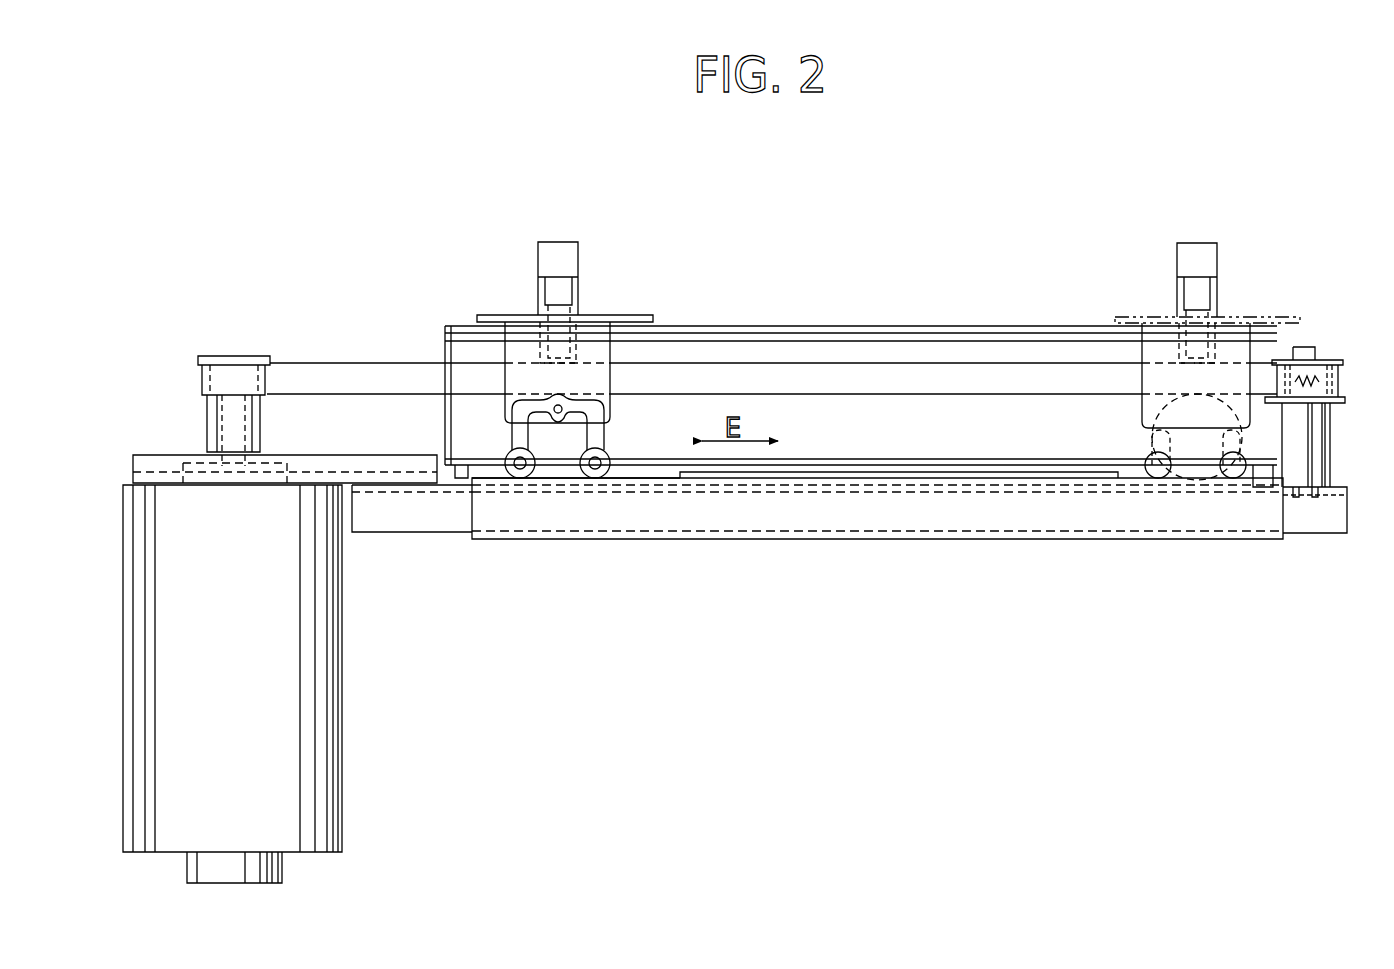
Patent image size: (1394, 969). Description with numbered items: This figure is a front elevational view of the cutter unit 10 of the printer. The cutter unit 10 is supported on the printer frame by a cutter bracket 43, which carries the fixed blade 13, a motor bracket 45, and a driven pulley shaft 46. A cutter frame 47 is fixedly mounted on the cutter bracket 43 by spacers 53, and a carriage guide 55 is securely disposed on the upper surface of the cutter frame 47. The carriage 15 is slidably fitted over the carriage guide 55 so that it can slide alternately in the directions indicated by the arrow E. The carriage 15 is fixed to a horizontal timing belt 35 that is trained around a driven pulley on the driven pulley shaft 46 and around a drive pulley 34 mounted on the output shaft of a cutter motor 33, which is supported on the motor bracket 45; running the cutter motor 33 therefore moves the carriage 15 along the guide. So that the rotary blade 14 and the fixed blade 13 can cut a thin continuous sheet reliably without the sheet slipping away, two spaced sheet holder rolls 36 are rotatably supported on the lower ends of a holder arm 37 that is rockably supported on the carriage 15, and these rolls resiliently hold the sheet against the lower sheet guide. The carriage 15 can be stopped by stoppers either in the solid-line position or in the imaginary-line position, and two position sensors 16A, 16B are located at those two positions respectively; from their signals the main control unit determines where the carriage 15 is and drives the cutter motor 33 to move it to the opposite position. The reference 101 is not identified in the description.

The cutter unit 10 is at (437, 247).
The fixed blade 13 is at (845, 520).
The rotary blade 14 is at (557, 478).
The carriage 15 is at (588, 335).
The position sensor 16A is at (583, 257).
The position sensor 16B is at (1220, 257).
The cutter motor 33 is at (345, 702).
The drive pulley 34 is at (215, 427).
The timing belt 35 is at (817, 385).
The sheet holder rolls 36 is at (508, 460).
The holder arm 37 is at (541, 393).
The cutter bracket 43 is at (418, 517).
The motor bracket 45 is at (335, 462).
The driven pulley shaft 46 is at (1300, 467).
The cutter frame 47 is at (873, 355).
The spacers 53 is at (458, 490).
The carriage guide 55 is at (848, 330).
The rail 101 is at (907, 470).